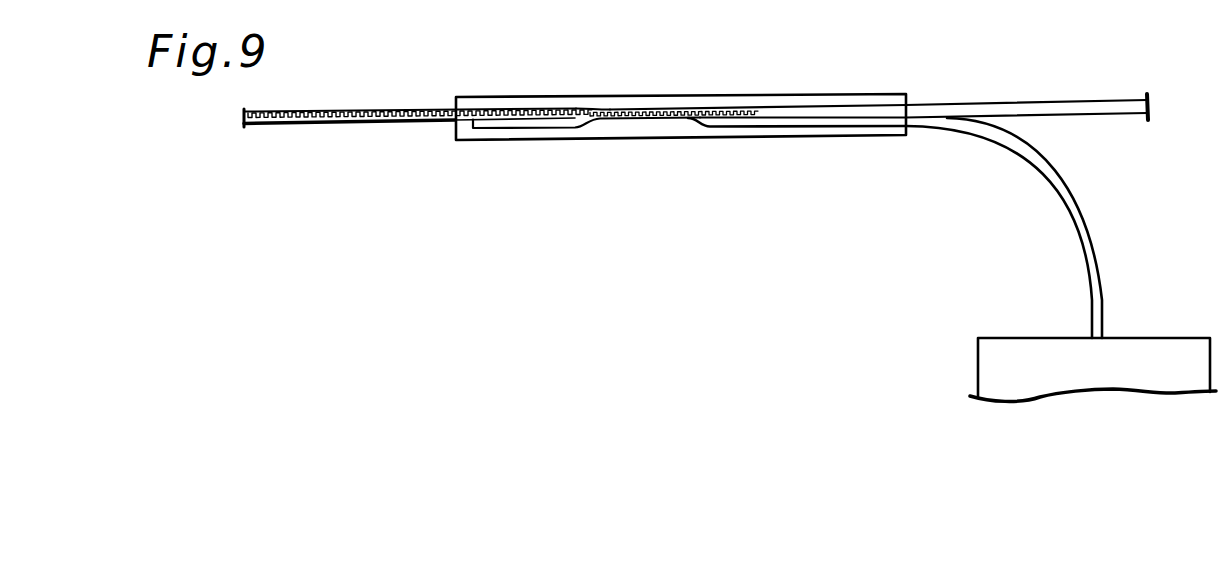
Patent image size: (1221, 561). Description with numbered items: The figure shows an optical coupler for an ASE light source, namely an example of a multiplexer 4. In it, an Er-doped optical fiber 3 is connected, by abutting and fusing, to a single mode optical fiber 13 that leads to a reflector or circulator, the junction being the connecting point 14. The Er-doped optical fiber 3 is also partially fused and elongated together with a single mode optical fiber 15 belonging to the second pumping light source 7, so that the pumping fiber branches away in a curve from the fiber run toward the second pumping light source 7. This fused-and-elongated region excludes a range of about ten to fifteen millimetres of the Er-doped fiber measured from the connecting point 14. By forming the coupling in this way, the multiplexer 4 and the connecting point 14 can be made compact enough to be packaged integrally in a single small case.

The Er-doped optical fiber 3 is at (342, 124).
The multiplexer 4 is at (655, 140).
The connecting point 14 is at (757, 113).
The single mode optical fiber 13 is at (1070, 98).
The single mode optical fiber 15 is at (1082, 225).
The second pumping light source 7 is at (1004, 345).